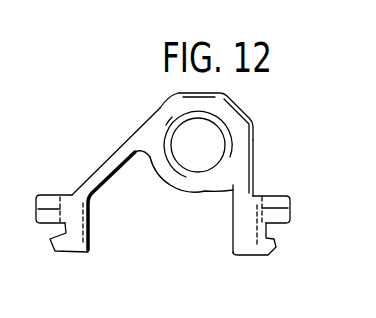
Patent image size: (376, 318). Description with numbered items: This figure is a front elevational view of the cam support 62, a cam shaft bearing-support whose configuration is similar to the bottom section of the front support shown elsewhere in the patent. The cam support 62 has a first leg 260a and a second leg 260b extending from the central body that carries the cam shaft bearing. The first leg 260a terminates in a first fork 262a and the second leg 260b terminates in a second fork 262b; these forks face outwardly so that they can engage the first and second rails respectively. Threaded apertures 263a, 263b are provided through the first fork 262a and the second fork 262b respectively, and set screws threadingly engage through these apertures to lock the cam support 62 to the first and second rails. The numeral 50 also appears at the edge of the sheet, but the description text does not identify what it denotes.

The cam support 62 is at (156, 112).
The first leg 260a is at (112, 156).
The second leg 260b is at (255, 186).
The threaded aperture 263a is at (50, 195).
The threaded aperture 263b is at (280, 197).
The first fork 262a is at (88, 243).
The second fork 262b is at (238, 246).
The housing 50 is at (14, 291).